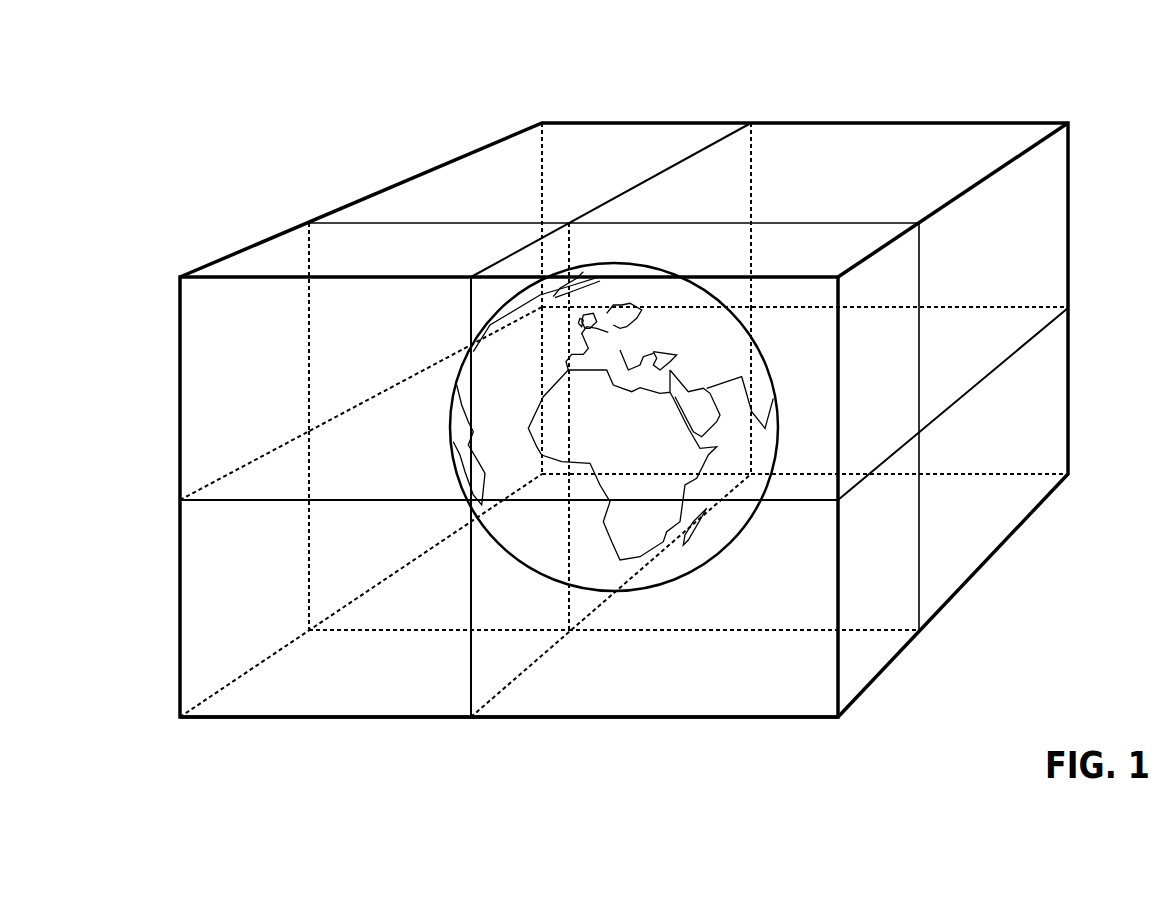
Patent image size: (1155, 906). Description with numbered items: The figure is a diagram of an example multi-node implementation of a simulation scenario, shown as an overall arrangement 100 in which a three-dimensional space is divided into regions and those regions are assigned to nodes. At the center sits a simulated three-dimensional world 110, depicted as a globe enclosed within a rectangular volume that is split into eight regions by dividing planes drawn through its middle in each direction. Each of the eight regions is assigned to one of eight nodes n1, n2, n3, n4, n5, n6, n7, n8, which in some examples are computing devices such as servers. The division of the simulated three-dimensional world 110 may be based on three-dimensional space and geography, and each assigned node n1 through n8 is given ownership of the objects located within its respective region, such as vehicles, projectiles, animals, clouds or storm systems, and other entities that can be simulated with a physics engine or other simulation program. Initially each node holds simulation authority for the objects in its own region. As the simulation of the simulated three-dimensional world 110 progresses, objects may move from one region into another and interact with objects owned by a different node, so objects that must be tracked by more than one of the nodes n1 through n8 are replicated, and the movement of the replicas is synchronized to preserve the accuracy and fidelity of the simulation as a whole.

The system / spatial region divided into nodes 100 is at (595, 54).
The simulated three-dimensional world 110 is at (450, 466).
The node n1 is at (838, 335).
The node n2 is at (180, 400).
The node n3 is at (302, 718).
The node n4 is at (675, 718).
The node n5 is at (477, 150).
The node n6 is at (1068, 128).
The node n7 is at (1068, 398).
The node n8 is at (302, 566).